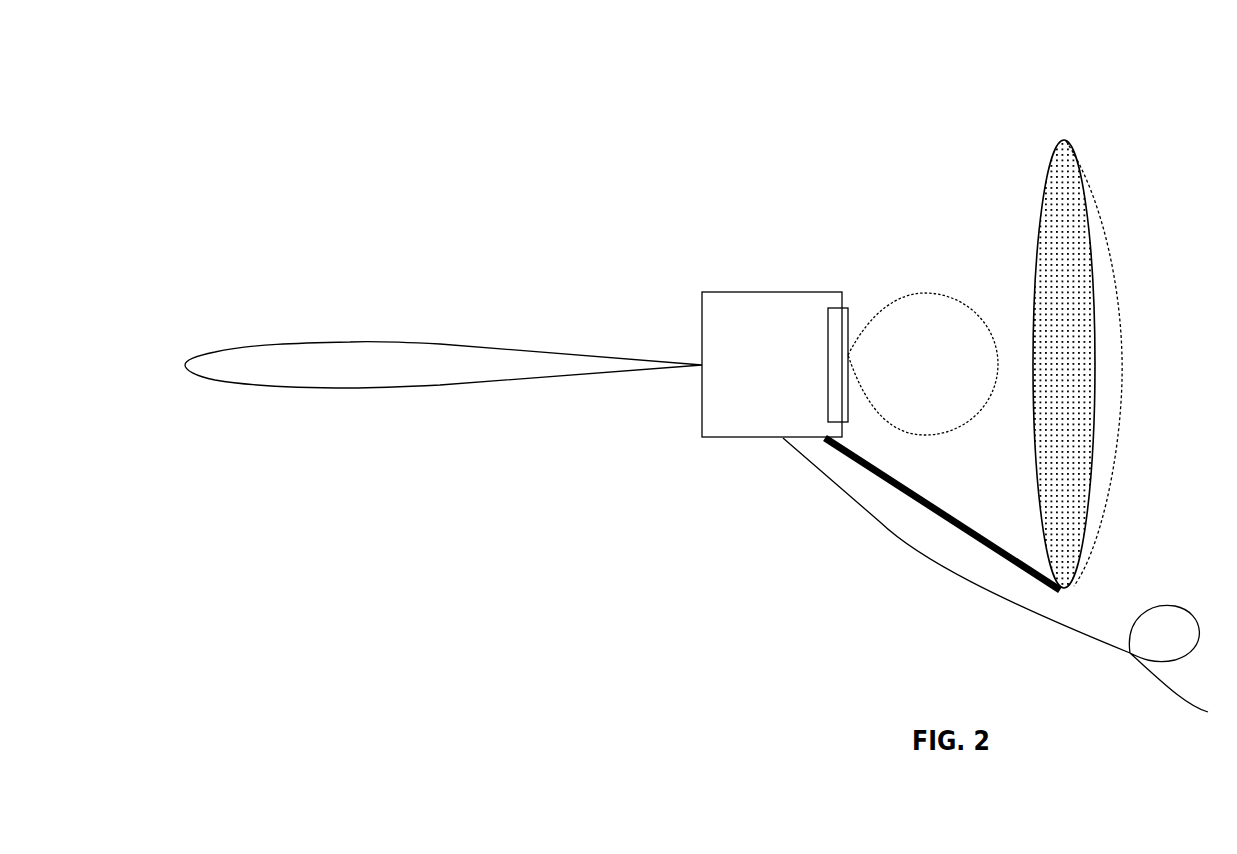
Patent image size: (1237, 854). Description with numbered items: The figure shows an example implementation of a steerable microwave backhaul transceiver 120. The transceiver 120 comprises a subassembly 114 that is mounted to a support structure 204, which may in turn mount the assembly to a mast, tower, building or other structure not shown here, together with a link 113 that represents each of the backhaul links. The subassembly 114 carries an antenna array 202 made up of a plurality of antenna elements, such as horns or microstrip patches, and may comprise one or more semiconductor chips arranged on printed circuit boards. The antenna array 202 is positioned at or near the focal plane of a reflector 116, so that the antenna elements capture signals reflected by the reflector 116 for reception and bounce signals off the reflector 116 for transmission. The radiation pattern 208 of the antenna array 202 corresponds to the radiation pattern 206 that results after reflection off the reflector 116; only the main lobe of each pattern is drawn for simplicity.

The transceiver 120 is at (702, 112).
The radiation pattern 206 is at (350, 342).
The subassembly 114 is at (756, 373).
The antenna array 202 is at (826, 408).
The radiation pattern 208 is at (950, 297).
The reflector 116 is at (1066, 140).
The support structure 204 is at (944, 512).
The link 113 is at (1006, 591).